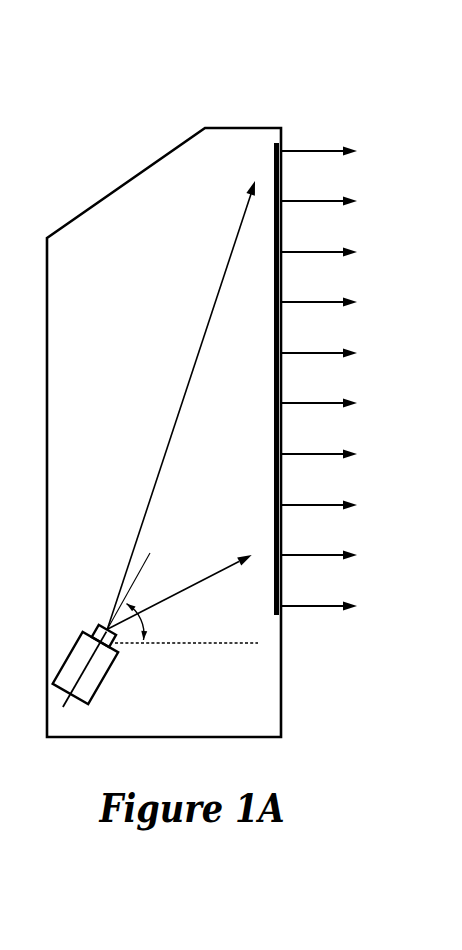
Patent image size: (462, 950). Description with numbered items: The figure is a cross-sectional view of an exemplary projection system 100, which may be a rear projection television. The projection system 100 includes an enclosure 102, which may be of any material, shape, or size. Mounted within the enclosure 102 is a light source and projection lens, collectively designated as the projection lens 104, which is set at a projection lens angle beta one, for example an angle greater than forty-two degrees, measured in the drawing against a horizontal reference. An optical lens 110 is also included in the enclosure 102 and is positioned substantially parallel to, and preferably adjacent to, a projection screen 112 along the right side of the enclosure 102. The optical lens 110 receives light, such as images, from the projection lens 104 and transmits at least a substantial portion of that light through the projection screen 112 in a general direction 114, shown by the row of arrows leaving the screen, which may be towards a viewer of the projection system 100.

The projection system 100 is at (116, 70).
The enclosure 102 is at (163, 156).
The light source and projection lens 104 is at (110, 676).
The optical lens 110 is at (273, 143).
The projection screen 112 is at (282, 233).
The general direction 114 is at (347, 201).